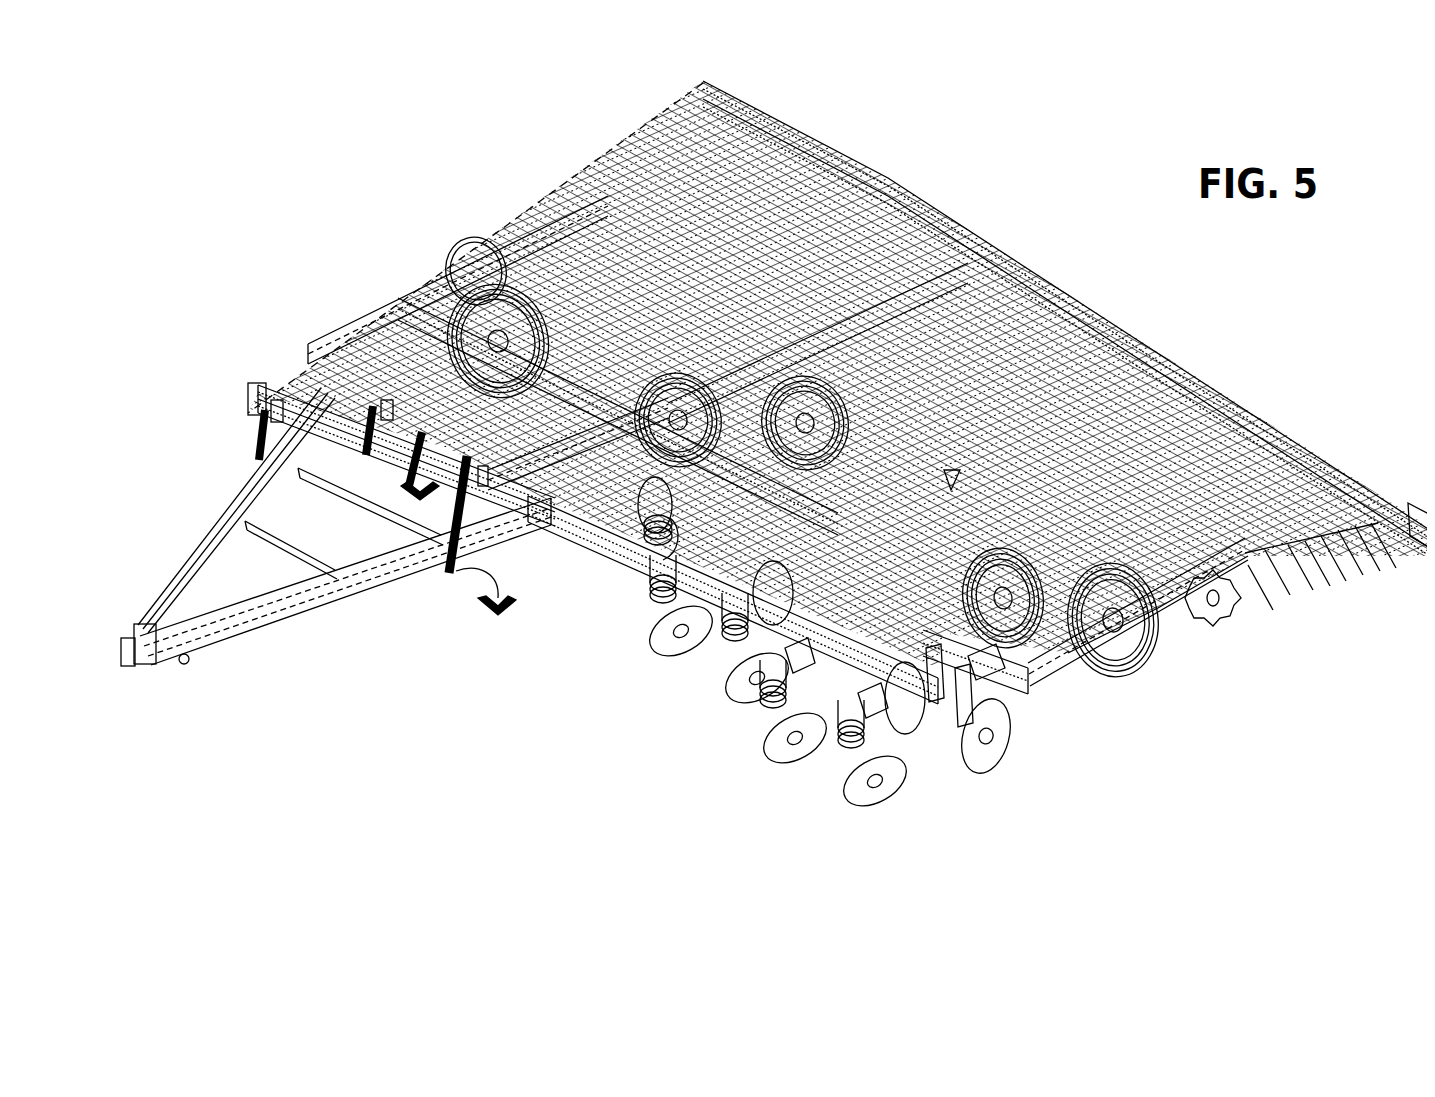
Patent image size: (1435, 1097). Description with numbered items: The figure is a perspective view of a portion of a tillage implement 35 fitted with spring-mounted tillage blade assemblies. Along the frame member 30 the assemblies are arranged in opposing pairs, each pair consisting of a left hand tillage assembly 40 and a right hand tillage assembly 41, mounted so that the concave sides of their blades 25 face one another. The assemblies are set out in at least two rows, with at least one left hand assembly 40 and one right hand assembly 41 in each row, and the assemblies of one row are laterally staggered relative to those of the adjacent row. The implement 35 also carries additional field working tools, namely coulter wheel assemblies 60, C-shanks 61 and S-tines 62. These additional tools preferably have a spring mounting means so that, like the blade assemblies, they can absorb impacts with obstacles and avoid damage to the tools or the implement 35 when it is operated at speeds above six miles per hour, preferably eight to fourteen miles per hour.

The blade 25 is at (970, 750).
The frame member 30 is at (638, 610).
The tillage implement 35 is at (1153, 700).
The left hand tillage assembly 40 is at (623, 653).
The right hand tillage assembly 41 is at (720, 543).
The coulter wheel assembly 60 is at (952, 463).
The C-shank 61 is at (460, 591).
The S-tine 62 is at (655, 520).